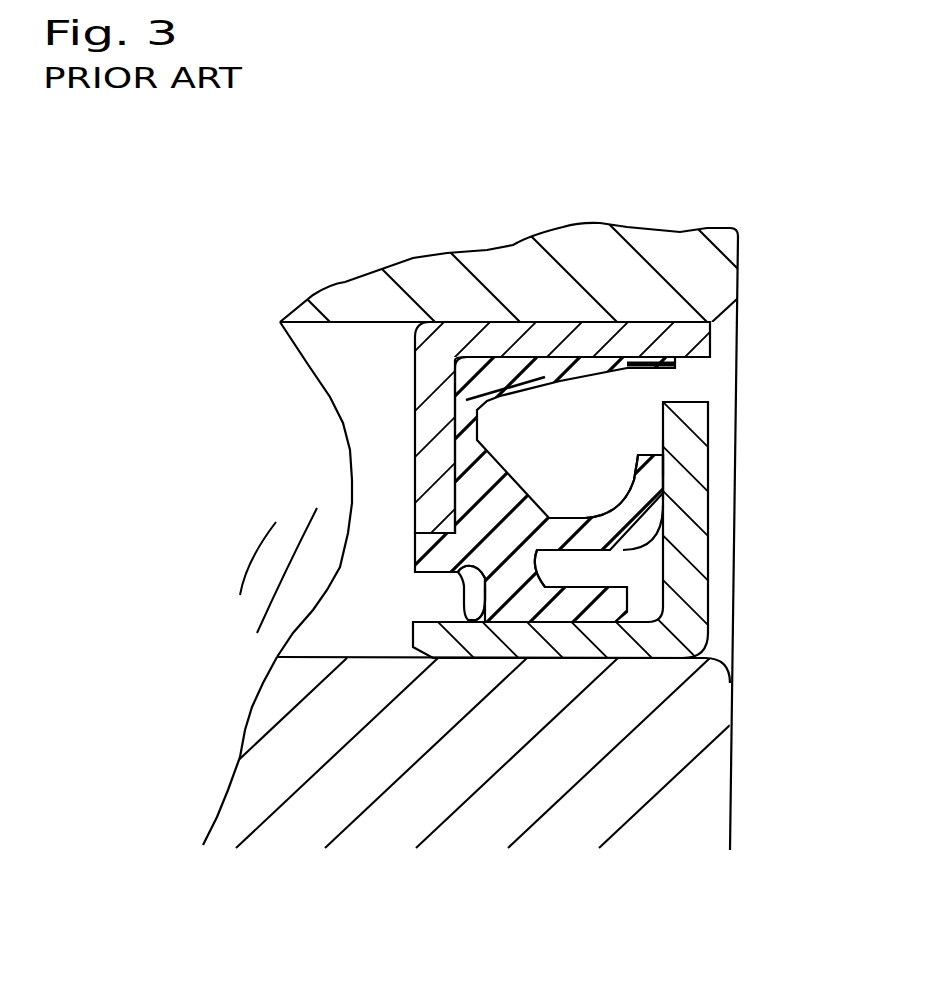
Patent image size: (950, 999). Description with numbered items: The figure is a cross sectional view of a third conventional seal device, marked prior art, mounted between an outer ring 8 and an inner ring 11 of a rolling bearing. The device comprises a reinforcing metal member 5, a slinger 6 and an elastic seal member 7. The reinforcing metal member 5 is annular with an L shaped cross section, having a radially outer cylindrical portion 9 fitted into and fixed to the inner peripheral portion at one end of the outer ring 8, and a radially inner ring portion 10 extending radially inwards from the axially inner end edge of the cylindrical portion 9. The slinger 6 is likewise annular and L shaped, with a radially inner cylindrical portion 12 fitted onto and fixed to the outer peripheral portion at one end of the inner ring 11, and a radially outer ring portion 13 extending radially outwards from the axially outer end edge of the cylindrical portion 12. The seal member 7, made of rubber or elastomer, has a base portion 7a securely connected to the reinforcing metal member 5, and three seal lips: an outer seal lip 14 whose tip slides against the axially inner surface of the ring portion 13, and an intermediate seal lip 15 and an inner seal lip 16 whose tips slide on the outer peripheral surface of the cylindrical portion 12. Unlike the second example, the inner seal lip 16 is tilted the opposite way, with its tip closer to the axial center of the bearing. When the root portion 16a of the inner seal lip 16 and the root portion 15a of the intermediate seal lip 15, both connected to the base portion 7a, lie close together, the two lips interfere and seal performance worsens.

The reinforcing metal member 5 is at (531, 344).
The slinger 6 is at (615, 521).
The seal member 7 is at (423, 494).
The base portion 7a is at (578, 471).
The outer ring 8 is at (610, 278).
The radially outer cylindrical portion 9 is at (540, 337).
The radially inner ring portion 10 is at (351, 460).
The inner ring 11 is at (759, 543).
The radially inner cylindrical portion 12 is at (530, 642).
The radially outer ring portion 13 is at (615, 410).
The outer seal lip 14 is at (738, 470).
The intermediate seal lip 15 is at (614, 655).
The root portion 15a is at (581, 568).
The inner seal lip 16 is at (316, 650).
The root portion 16a is at (421, 597).